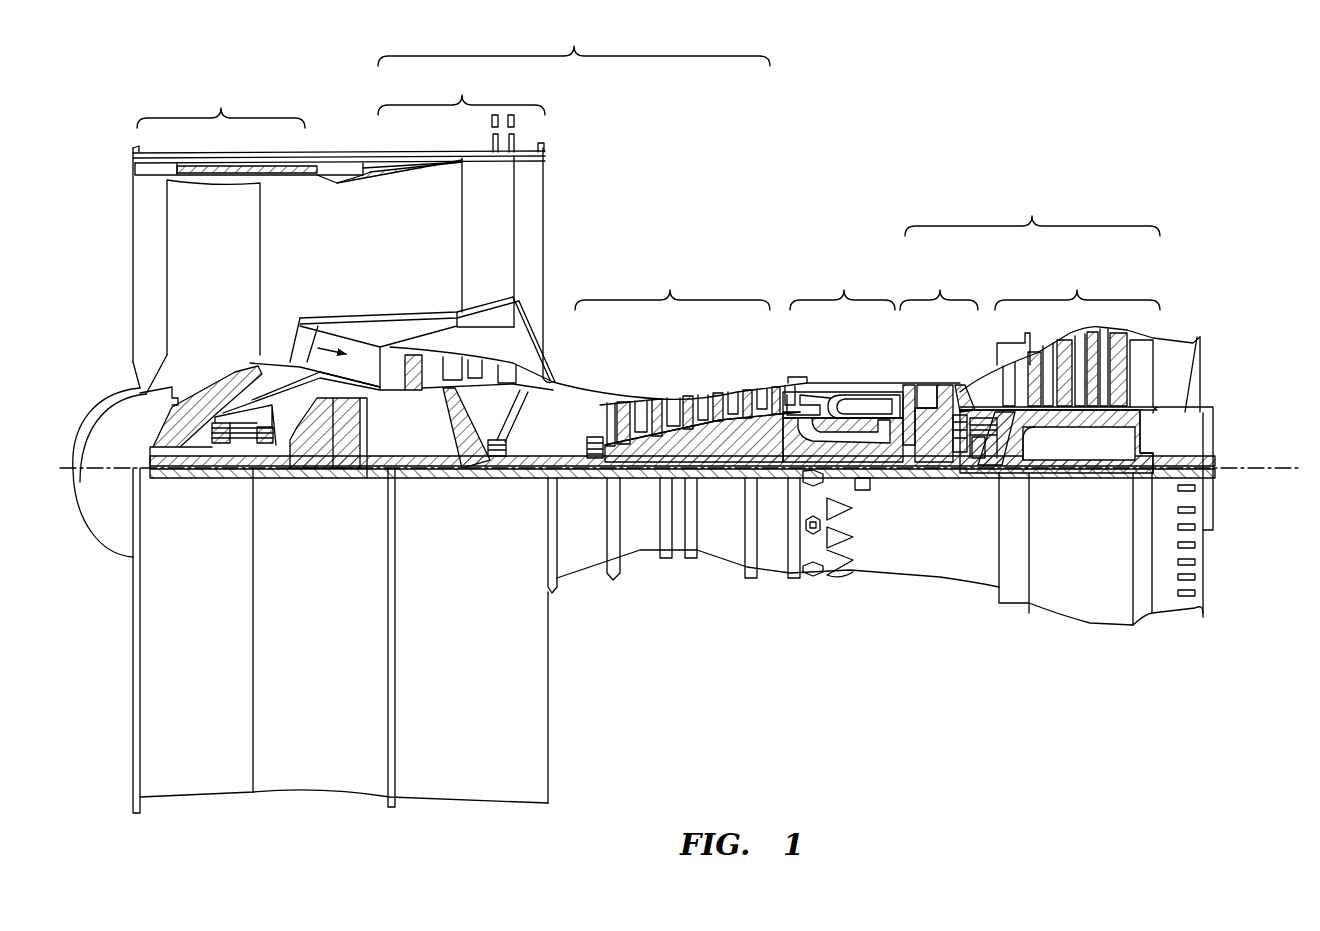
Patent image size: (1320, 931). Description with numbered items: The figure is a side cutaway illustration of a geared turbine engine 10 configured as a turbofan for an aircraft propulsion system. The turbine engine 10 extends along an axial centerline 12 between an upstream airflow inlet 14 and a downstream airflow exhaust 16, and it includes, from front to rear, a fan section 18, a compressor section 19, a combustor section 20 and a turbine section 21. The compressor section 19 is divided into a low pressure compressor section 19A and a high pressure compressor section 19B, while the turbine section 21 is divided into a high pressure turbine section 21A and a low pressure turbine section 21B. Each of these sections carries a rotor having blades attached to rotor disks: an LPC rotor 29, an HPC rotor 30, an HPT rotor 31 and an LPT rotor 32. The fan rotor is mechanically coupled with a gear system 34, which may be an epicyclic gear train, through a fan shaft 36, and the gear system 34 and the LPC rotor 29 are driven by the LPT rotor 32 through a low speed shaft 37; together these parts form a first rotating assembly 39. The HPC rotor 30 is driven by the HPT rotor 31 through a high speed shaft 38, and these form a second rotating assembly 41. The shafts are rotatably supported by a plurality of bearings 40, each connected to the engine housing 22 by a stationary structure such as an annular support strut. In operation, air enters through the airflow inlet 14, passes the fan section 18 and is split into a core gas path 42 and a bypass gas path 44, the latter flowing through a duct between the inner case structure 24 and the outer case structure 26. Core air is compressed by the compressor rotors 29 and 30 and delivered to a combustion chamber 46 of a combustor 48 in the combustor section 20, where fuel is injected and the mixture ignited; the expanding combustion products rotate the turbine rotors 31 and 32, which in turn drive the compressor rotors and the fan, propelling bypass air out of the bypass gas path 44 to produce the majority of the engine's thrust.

The geared turbine engine 10 is at (100, 130).
The axial centerline 12 is at (1300, 473).
The upstream airflow inlet 14 is at (132, 229).
The downstream airflow exhaust 16 is at (1200, 372).
The fan section 18 is at (221, 100).
The compressor section 19 is at (574, 39).
The low pressure compressor section 19A is at (461, 88).
The high pressure compressor section 19B is at (672, 284).
The combustor section 20 is at (842, 284).
The turbine section 21 is at (1032, 208).
The high pressure turbine section 21A is at (939, 284).
The low pressure turbine section 21B is at (1077, 284).
The engine housing 22 is at (570, 592).
The inner case structure 24 is at (140, 393).
The outer case structure 26 is at (520, 806).
The LPC rotor 29 is at (447, 413).
The HPC rotor 30 is at (728, 435).
The HPT rotor 31 is at (930, 460).
The LPT rotor 32 is at (1073, 428).
The gear system 34 is at (355, 472).
The fan shaft 36 is at (206, 490).
The low speed shaft 37 is at (1080, 475).
The high speed shaft 38 is at (568, 397).
The first rotating assembly 39 is at (370, 482).
The bearings 40 is at (392, 244).
The second rotating assembly 41 is at (890, 463).
The core gas path 42 is at (295, 333).
The bypass gas path 44 is at (545, 210).
The combustion chamber 46 is at (852, 410).
The combustor 48 is at (880, 387).